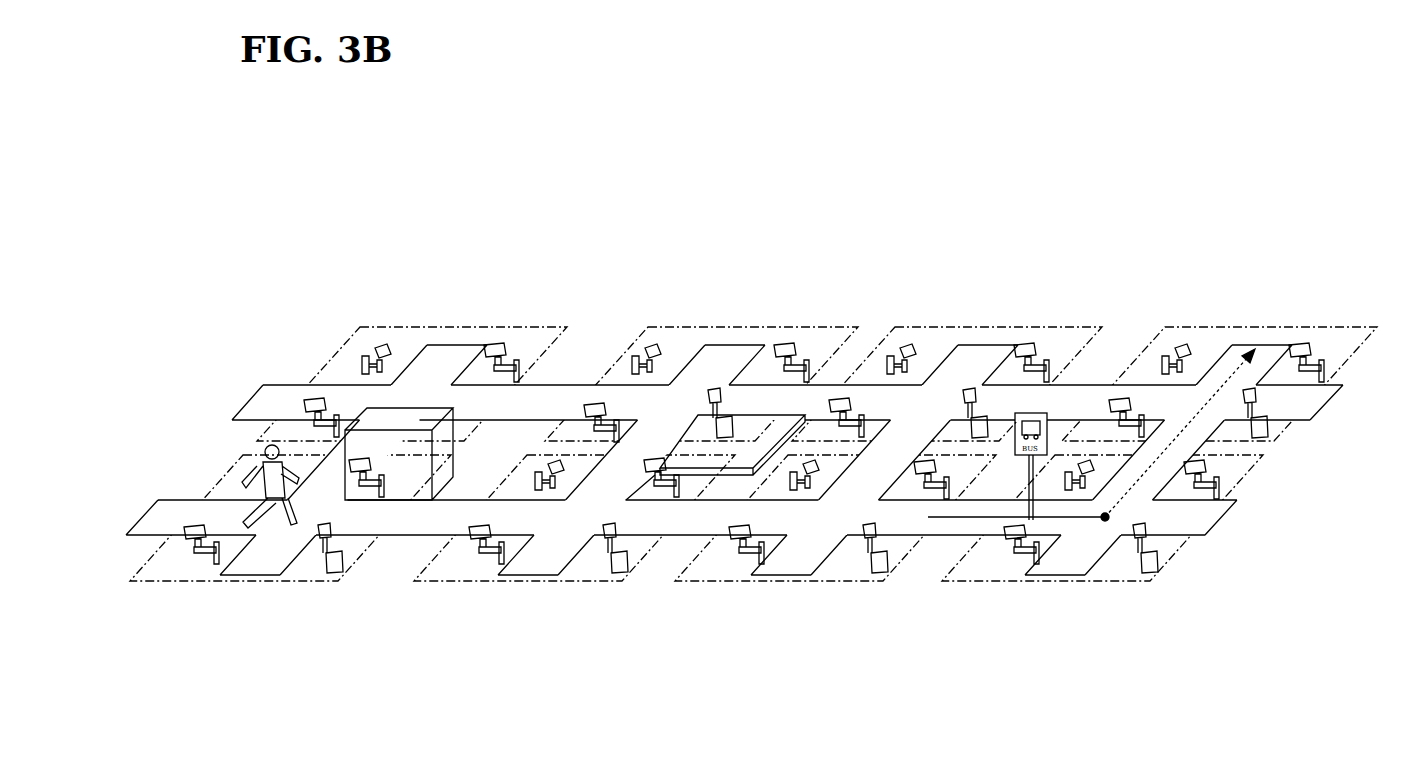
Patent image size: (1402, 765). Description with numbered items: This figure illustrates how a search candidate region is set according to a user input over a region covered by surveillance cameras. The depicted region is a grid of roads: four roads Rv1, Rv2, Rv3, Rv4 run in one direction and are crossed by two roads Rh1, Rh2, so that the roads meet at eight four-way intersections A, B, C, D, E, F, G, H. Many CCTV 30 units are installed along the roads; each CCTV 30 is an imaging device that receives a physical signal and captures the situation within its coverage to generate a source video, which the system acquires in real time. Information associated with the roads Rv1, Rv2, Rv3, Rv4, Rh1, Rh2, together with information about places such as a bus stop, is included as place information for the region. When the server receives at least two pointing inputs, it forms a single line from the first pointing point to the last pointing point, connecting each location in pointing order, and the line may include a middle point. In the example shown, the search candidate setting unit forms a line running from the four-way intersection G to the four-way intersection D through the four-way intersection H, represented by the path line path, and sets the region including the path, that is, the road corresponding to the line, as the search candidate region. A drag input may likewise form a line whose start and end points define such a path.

The CCTV 30 is at (372, 352).
The four-way intersection A is at (525, 328).
The four-way intersection B is at (818, 330).
The four-way intersection C is at (1066, 330).
The four-way intersection D is at (1325, 330).
The four-way intersection E is at (179, 582).
The four-way intersection F is at (473, 583).
The four-way intersection G is at (854, 583).
The four-way intersection H is at (1106, 583).
The road Rv1 is at (457, 342).
The road Rv2 is at (755, 344).
The road Rv3 is at (983, 344).
The road Rv4 is at (1258, 344).
The road Rh1 is at (248, 397).
The road Rh2 is at (140, 510).
The path line path is at (1197, 412).